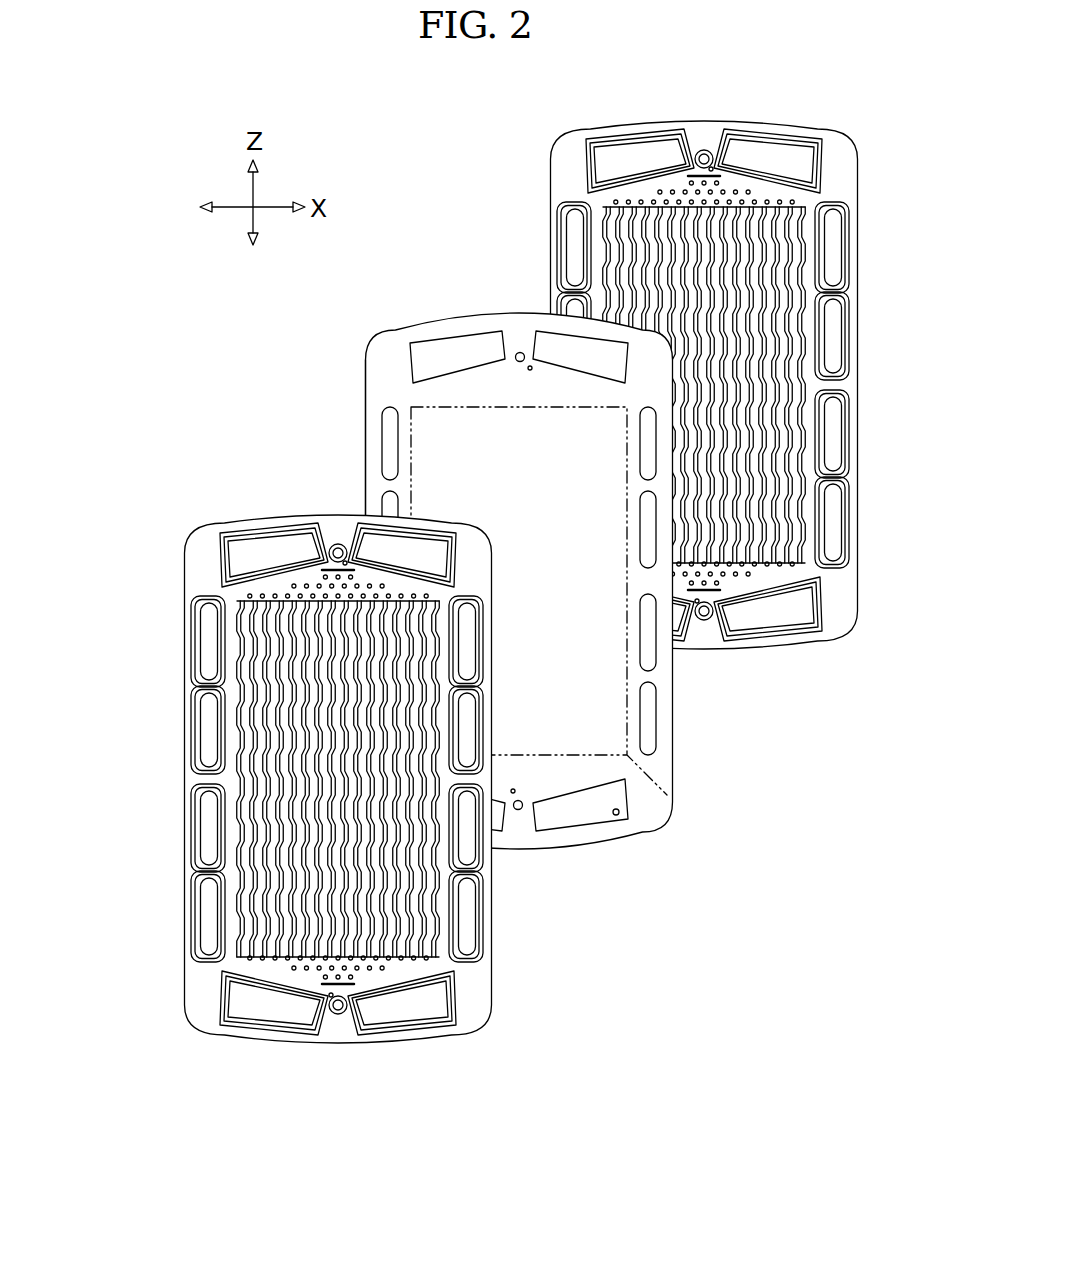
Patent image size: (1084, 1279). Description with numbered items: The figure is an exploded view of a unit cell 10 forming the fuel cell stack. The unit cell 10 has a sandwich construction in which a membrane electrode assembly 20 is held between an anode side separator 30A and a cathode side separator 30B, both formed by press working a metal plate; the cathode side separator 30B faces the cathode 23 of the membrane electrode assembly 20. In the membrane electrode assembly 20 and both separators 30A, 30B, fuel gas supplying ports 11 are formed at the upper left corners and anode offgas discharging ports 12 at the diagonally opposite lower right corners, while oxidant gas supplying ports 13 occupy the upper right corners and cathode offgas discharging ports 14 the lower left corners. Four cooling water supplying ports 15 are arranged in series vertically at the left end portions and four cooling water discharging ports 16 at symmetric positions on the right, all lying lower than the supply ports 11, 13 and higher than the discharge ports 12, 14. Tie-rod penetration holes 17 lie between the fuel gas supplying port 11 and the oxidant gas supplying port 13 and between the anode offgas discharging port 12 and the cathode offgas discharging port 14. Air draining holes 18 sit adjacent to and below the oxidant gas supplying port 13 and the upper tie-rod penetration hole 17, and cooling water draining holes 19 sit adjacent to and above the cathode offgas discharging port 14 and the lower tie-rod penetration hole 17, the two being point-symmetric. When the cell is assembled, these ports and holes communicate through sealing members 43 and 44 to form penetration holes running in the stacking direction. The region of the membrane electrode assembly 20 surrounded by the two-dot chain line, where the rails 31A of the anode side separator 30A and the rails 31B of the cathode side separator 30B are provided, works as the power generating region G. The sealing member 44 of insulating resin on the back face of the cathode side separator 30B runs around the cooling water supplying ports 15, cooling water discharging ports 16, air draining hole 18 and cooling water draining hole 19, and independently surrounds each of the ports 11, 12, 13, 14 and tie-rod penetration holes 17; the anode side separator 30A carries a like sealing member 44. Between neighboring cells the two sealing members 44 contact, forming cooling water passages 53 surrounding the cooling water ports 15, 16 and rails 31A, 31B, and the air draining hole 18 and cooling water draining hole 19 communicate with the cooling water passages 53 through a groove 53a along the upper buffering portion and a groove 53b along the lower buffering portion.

The unit cell 10 is at (410, 191).
The fuel gas supplying port 11 is at (457, 328).
The anode offgas discharging port 12 is at (624, 825).
The oxidant gas supplying port 13 is at (585, 333).
The cathode offgas discharging port 14 is at (484, 836).
The cooling water supplying port 15 is at (348, 577).
The cooling water discharging port 16 is at (690, 588).
The tie-rod penetration hole 17 is at (557, 580).
The air draining hole 18 is at (559, 310).
The cooling water draining hole 19 is at (535, 861).
The membrane electrode assembly 20 is at (496, 556).
The cathode 23 is at (335, 576).
The anode side separator 30A is at (699, 358).
The cathode side separator 30B is at (335, 751).
The rails of the anode side separator 31A is at (868, 383).
The rails of the cathode side separator 31B is at (505, 798).
The sealing member 43 is at (810, 609).
The sealing member 44 is at (446, 1005).
The cooling water passage 53 is at (286, 779).
The groove 53a is at (278, 568).
The groove 53b is at (350, 1026).
The power generating region G is at (565, 619).